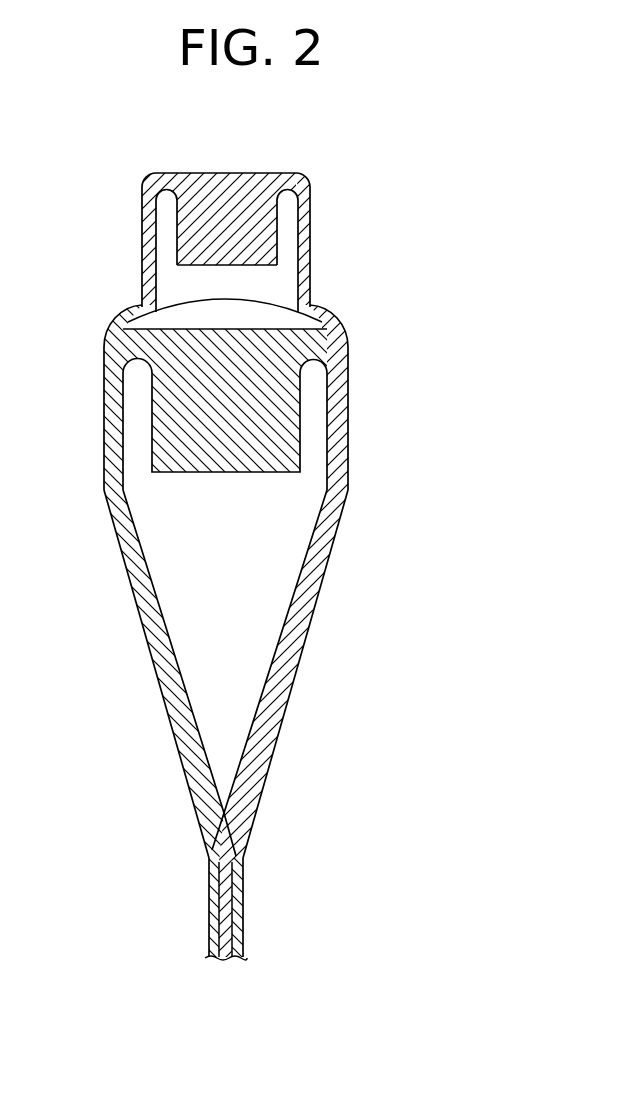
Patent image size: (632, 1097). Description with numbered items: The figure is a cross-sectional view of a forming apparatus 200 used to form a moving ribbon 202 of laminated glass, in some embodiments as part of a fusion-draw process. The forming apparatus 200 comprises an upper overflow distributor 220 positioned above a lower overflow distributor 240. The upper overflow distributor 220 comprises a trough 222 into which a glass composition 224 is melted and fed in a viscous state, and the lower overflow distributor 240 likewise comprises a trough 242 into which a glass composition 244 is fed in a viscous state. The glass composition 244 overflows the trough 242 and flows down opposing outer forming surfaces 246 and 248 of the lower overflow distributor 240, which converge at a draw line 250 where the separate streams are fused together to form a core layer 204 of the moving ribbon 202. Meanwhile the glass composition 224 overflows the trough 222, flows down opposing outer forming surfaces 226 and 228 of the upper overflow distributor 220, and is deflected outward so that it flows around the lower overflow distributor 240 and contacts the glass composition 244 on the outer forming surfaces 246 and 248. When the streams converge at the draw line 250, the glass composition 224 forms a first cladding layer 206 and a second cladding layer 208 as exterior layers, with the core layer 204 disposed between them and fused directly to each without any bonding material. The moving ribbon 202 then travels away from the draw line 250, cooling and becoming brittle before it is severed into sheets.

The forming apparatus 200 is at (395, 207).
The moving ribbon 202 is at (178, 962).
The core layer 204 is at (215, 870).
The first cladding layer 206 is at (207, 920).
The second cladding layer 208 is at (243, 915).
The upper overflow distributor 220 is at (299, 200).
The trough 222 is at (175, 232).
The glass composition 224 is at (217, 185).
The outer forming surface 226 is at (157, 277).
The outer forming surface 228 is at (287, 250).
The lower overflow distributor 240 is at (318, 397).
The trough 242 is at (147, 417).
The glass composition 244 is at (213, 345).
The outer forming surface 246 is at (138, 538).
The outer forming surface 248 is at (303, 568).
The draw line 250 is at (235, 822).